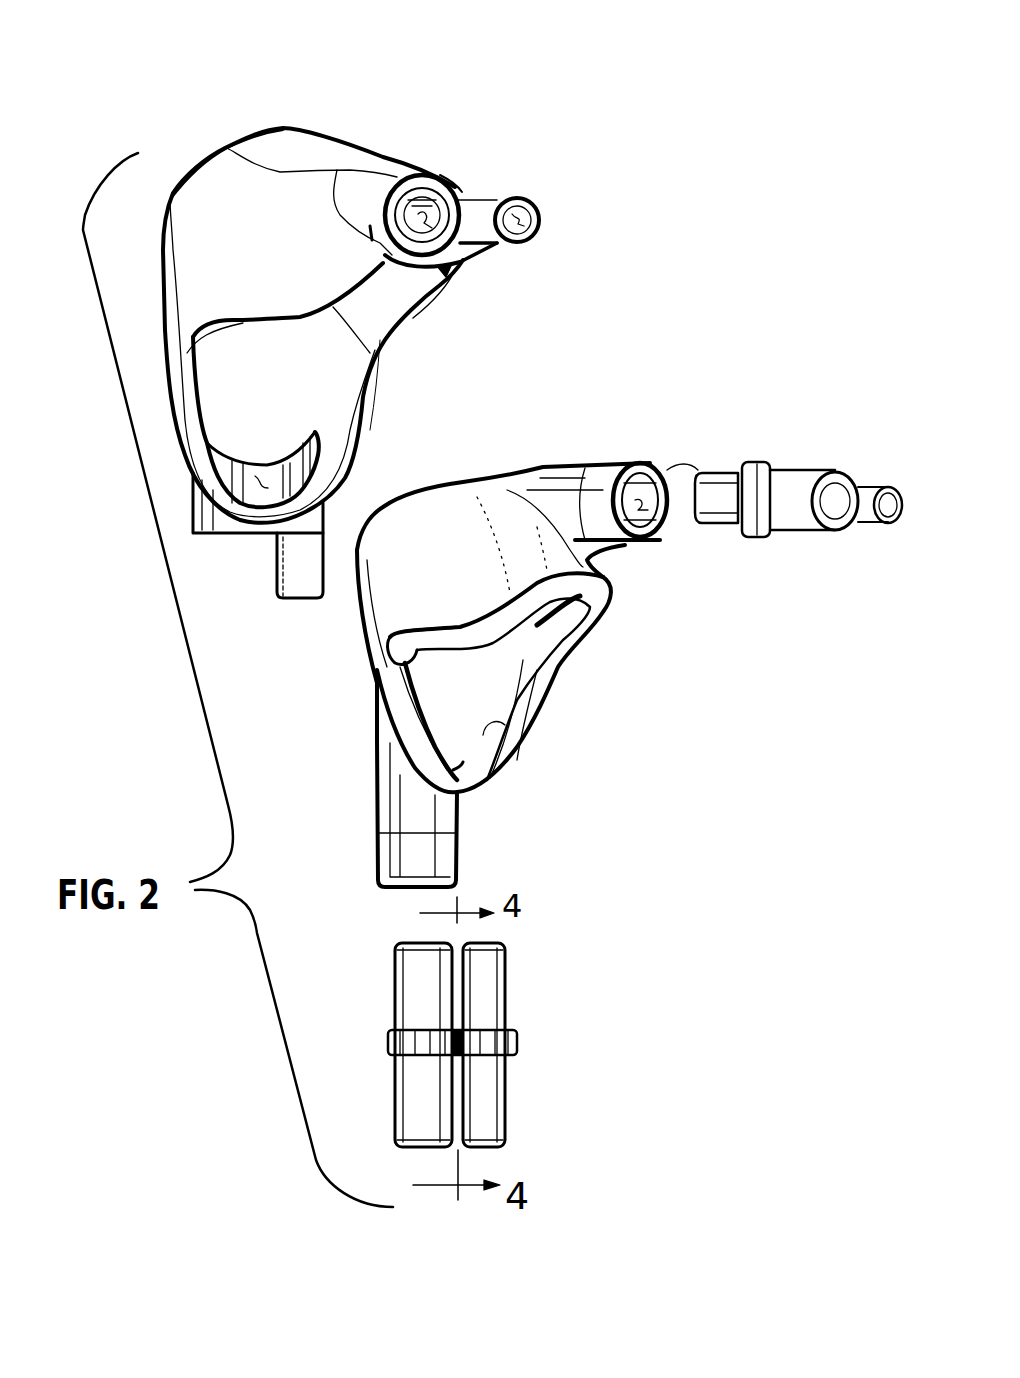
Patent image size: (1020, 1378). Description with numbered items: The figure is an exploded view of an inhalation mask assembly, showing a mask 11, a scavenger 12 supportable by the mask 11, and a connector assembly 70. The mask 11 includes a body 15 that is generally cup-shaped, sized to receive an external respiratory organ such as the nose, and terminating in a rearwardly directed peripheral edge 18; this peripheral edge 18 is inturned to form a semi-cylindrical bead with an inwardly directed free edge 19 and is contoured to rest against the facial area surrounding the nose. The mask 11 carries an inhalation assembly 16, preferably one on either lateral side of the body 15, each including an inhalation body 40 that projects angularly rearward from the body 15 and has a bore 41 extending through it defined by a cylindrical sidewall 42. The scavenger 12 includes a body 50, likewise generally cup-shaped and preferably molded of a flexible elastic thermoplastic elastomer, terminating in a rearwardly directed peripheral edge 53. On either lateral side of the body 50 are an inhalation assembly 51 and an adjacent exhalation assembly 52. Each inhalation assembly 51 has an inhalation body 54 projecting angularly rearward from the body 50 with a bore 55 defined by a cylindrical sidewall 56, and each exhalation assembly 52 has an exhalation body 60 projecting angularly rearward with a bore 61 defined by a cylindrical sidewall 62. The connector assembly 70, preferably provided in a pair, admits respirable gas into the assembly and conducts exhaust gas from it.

The mask 11 is at (461, 485).
The scavenger 12 is at (405, 317).
The body 15 is at (362, 630).
The inhalation assembly 16 is at (587, 462).
The peripheral edge 18 is at (530, 694).
The free edge 19 is at (490, 778).
The inhalation body 40 is at (620, 548).
The bore 41 is at (675, 478).
The cylindrical sidewall 42 is at (612, 460).
The body 50 is at (175, 250).
The inhalation assembly 51 is at (380, 173).
The exhalation assembly 52 is at (490, 183).
The peripheral edge 53 is at (370, 430).
The inhalation body 54 is at (452, 175).
The bore 55 is at (468, 288).
The cylindrical sidewall 56 is at (357, 246).
The exhalation body 60 is at (515, 192).
The bore 61 is at (537, 227).
The cylindrical sidewall 62 is at (480, 247).
The connector assembly 70 is at (802, 533).